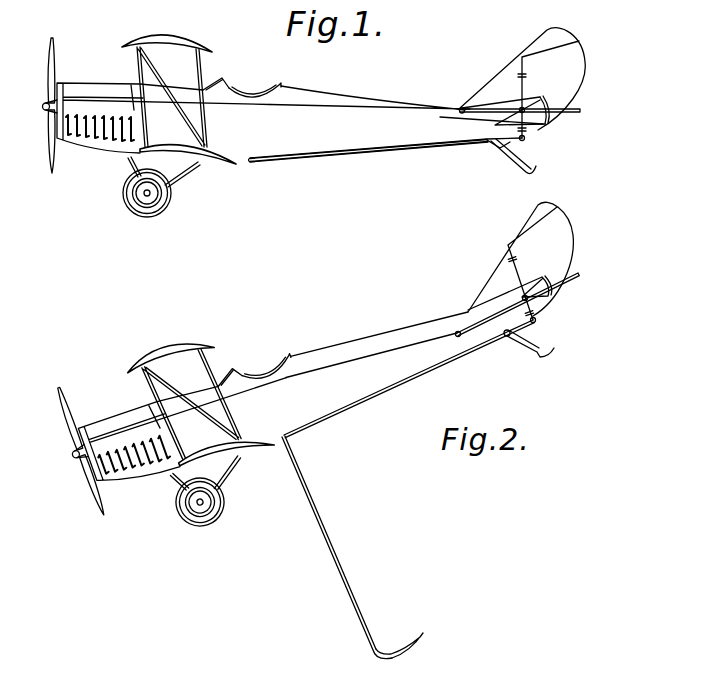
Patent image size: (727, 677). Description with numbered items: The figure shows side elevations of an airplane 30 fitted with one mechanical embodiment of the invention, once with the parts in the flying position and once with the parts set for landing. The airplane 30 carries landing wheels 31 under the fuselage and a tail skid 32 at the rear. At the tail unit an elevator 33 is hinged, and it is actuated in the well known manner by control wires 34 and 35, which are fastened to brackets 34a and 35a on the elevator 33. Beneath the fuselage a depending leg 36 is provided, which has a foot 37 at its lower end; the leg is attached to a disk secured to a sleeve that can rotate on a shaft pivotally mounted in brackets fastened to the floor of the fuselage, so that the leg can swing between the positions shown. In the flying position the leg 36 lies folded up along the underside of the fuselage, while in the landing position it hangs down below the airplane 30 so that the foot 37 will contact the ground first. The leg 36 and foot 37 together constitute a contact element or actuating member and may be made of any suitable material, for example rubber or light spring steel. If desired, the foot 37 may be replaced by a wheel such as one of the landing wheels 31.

In FIG. 1, the airplane 30 is at (356, 118).
In FIG. 2, the airplane 30 is at (357, 358).
In FIG. 1, the landing wheels 31 is at (163, 208).
In FIG. 2, the landing wheels 31 is at (225, 502).
In FIG. 1, the tail skid 32 is at (518, 160).
In FIG. 2, the tail skid 32 is at (545, 343).
In FIG. 1, the elevator 33 is at (568, 114).
In FIG. 2, the elevator 33 is at (577, 280).
In FIG. 1, the control wire 34 is at (507, 100).
In FIG. 1, the bracket 34a is at (553, 98).
In FIG. 1, the control wire 35 is at (498, 152).
In FIG. 1, the bracket 35a is at (550, 117).
In FIG. 1, the depending leg 36 is at (378, 156).
In FIG. 2, the depending leg 36 is at (342, 560).
In FIG. 2, the foot 37 is at (415, 642).